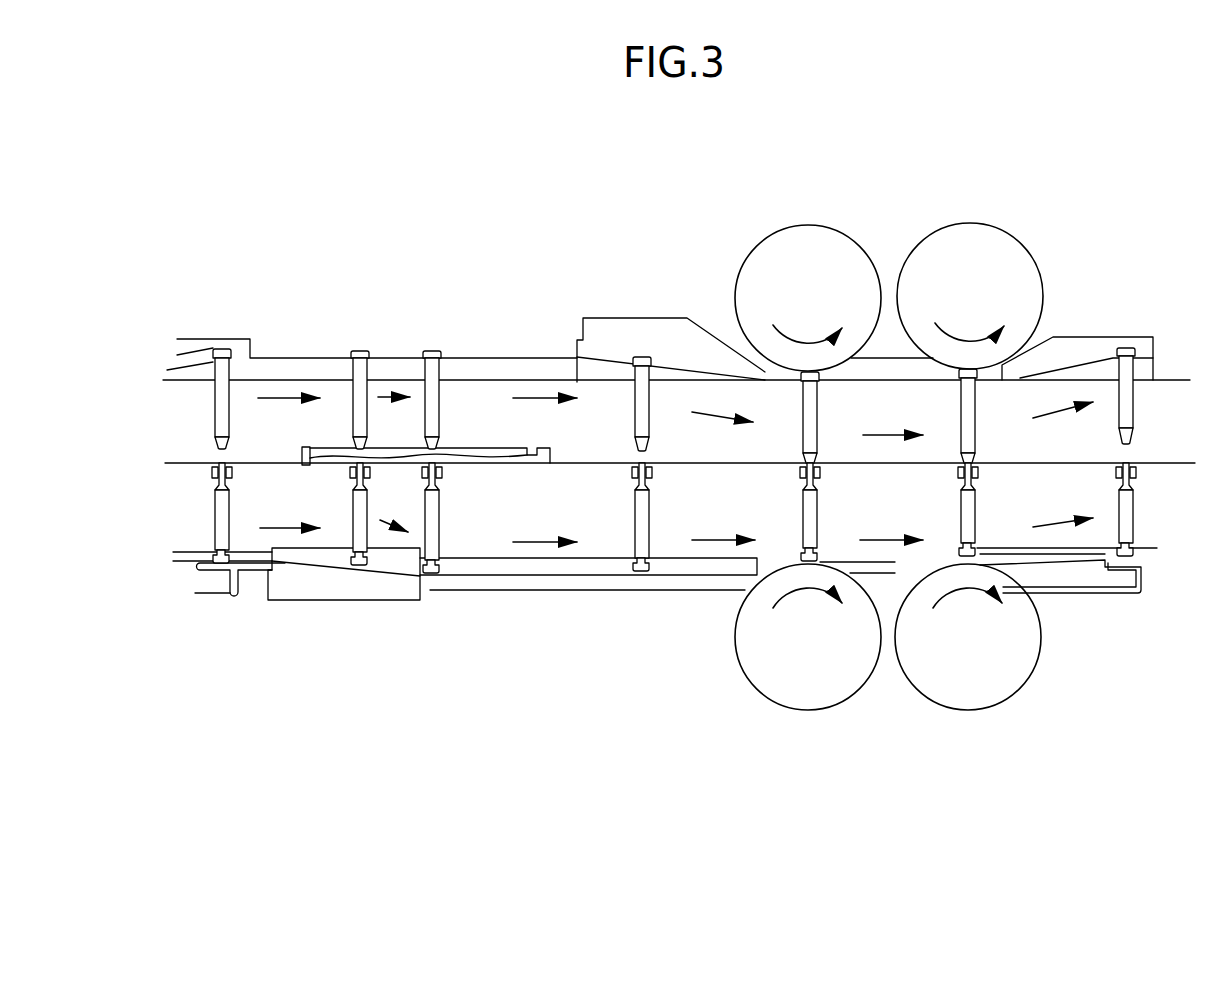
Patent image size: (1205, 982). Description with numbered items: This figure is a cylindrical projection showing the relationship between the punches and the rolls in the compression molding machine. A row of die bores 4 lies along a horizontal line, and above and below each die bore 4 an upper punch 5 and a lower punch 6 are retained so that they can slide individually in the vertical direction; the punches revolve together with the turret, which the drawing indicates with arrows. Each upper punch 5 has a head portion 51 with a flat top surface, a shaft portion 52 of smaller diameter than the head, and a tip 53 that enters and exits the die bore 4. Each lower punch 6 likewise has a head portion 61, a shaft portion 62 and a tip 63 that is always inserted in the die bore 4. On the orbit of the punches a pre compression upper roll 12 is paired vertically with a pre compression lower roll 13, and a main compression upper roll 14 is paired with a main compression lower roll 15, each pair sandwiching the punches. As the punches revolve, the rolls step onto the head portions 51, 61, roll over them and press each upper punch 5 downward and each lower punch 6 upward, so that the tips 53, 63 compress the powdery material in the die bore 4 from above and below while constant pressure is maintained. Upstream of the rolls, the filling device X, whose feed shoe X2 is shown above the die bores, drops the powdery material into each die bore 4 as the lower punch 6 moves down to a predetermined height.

The die bore 4 is at (215, 465).
The upper punch 5 is at (650, 406).
The lower punch 6 is at (653, 584).
The pre compression upper roll 12 is at (814, 225).
The pre compression lower roll 13 is at (773, 704).
The main compression upper roll 14 is at (1013, 237).
The main compression lower roll 15 is at (1042, 657).
The head portion 51 is at (222, 348).
The shaft portion 52 is at (213, 412).
The tip 53 is at (225, 452).
The head portion 61 is at (217, 568).
The shaft portion 62 is at (213, 508).
The tip 63 is at (228, 465).
The filling device X is at (476, 440).
The feed shoe X2 is at (527, 448).